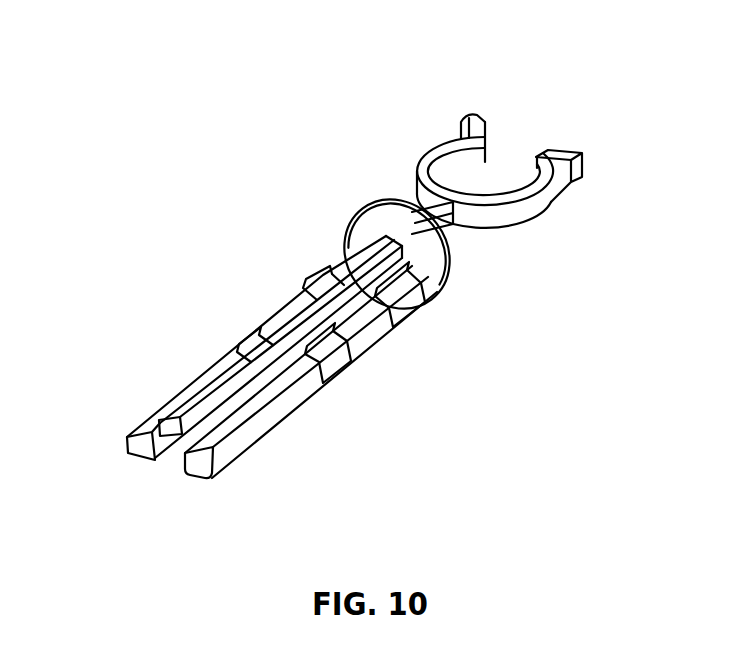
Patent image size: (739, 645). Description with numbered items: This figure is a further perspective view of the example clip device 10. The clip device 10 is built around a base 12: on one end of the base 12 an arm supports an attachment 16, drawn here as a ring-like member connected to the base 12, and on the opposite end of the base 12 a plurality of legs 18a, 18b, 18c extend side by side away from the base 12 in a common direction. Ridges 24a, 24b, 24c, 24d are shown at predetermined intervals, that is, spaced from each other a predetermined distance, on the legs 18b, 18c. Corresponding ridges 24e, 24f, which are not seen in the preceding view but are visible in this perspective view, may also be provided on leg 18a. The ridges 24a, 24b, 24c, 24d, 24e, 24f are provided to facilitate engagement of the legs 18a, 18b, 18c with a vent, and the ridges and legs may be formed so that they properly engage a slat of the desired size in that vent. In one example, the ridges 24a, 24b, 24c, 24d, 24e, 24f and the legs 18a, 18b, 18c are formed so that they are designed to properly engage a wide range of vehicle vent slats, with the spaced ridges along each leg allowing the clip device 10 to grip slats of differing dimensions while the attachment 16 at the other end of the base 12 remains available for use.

The clip device 10 is at (590, 106).
The base 12 is at (388, 201).
The attachment 16 is at (553, 207).
The leg 18a is at (168, 418).
The leg 18b is at (139, 462).
The leg 18c is at (199, 465).
The ridge 24a is at (407, 318).
The ridge 24b is at (340, 373).
The ridge 24c is at (310, 278).
The ridge 24d is at (247, 335).
The ridge 24e is at (338, 342).
The ridge 24f is at (418, 296).